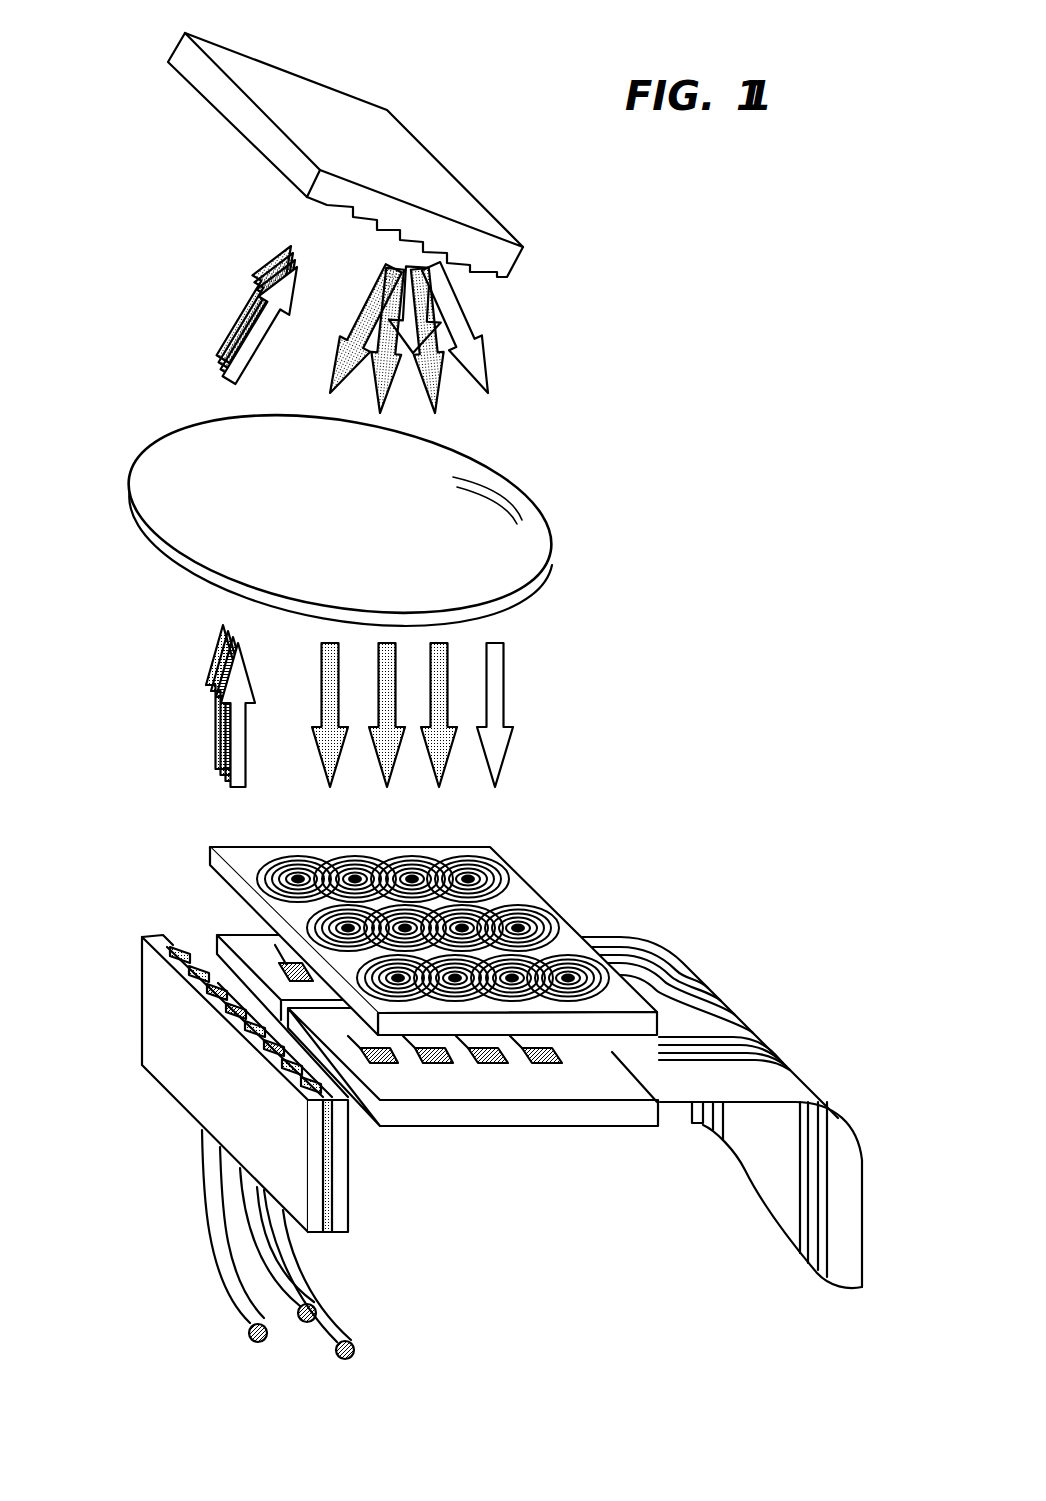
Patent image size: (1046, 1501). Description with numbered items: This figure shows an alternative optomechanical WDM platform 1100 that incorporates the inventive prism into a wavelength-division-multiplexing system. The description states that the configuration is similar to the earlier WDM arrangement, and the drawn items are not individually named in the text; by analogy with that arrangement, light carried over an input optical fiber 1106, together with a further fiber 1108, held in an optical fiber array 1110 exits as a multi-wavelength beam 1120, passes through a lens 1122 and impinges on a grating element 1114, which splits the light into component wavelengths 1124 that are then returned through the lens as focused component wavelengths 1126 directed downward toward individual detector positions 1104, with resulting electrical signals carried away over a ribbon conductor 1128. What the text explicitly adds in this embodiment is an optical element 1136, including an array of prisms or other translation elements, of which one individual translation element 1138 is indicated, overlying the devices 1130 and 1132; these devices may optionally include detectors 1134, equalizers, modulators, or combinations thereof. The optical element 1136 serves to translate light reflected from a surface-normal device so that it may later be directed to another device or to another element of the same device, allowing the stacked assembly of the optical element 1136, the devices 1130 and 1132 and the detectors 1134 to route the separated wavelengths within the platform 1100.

The imaging system 1100 is at (722, 149).
The cable 1104 is at (353, 1340).
The cable 1106 is at (207, 1253).
The cable 1108 is at (287, 1283).
The connector block 1110 is at (142, 1007).
The prism 1114 is at (524, 250).
The light beam 1120 is at (210, 680).
The lens 1122 is at (140, 457).
The light rays 1124 is at (233, 330).
The light rays 1126 is at (503, 677).
The flexible circuit 1128 is at (787, 1058).
The device 1130 is at (538, 1124).
The device 1132 is at (215, 933).
The detectors 1134 is at (433, 1065).
The optical element 1136 is at (409, 890).
The sensor element 1138 is at (298, 877).